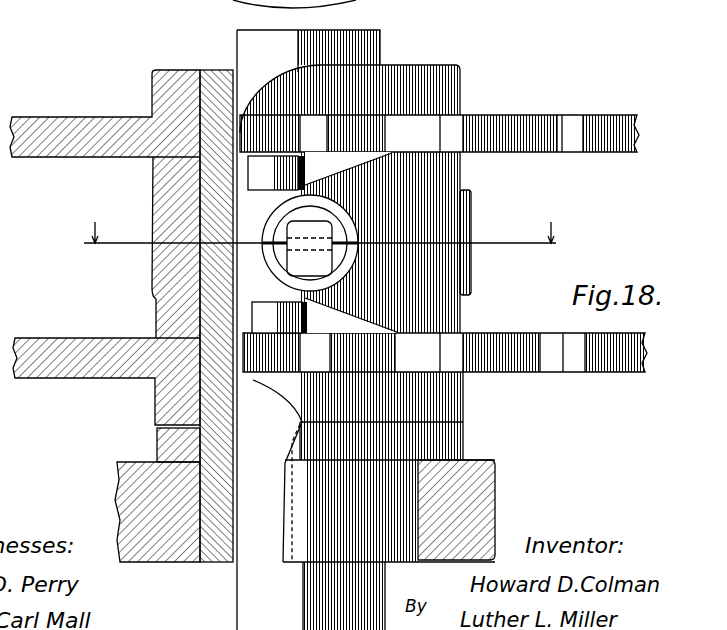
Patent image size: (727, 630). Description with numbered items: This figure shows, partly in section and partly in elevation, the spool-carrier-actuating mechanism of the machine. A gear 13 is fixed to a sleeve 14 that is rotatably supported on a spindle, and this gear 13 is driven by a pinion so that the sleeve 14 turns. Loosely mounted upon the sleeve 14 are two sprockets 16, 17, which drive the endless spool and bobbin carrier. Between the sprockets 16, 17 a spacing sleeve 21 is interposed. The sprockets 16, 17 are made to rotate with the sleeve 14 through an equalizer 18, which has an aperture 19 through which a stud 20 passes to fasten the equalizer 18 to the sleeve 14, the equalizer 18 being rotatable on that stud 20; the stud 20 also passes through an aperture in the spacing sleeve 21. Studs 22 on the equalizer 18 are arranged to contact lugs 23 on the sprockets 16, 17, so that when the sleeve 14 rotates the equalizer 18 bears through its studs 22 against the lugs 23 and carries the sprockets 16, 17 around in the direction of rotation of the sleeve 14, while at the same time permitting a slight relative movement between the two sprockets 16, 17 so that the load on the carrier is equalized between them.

The gear 13 is at (495, 471).
The sleeve 14 is at (218, 478).
The sprocket 16 is at (521, 333).
The sprocket 17 is at (541, 115).
The equalizer 18 is at (256, 198).
The aperture 19 is at (322, 238).
The stud 20 is at (302, 258).
The spacing sleeve 21 is at (152, 268).
The studs 22 is at (262, 171).
The lugs 23 is at (317, 172).